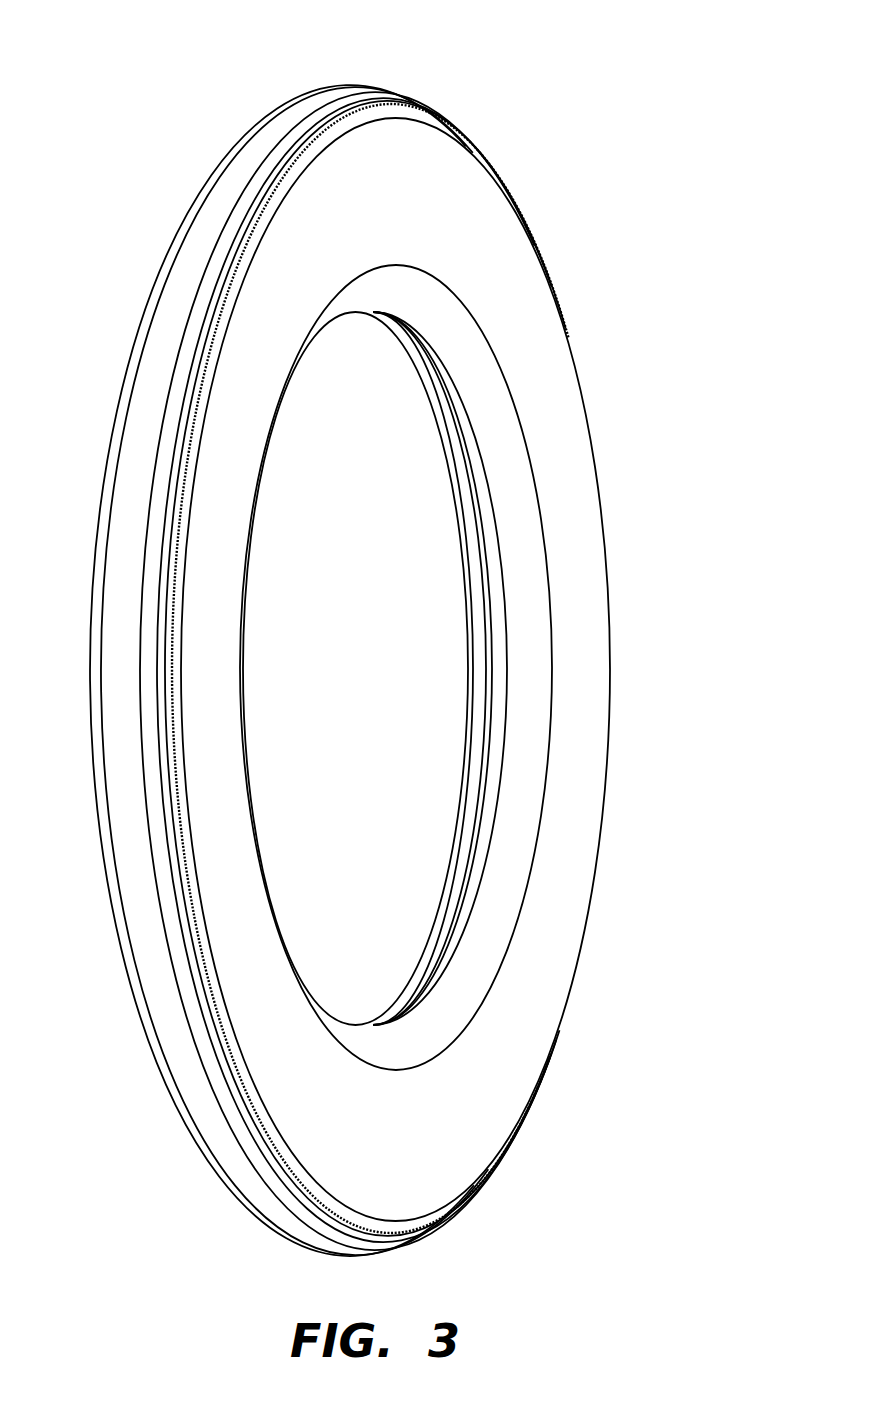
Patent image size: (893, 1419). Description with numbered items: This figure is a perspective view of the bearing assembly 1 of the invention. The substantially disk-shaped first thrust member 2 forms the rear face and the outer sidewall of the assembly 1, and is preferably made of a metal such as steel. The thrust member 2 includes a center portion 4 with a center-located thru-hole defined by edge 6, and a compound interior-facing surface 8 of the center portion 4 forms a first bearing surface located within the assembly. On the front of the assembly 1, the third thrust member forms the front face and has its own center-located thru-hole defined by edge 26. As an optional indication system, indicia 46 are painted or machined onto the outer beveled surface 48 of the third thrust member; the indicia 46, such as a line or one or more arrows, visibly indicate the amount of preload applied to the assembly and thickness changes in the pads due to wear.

The bearing assembly 1 is at (152, 121).
The first thrust member 2 is at (148, 291).
The center portion 4 is at (335, 56).
The edge 6 is at (423, 395).
The compound interior-facing surface 8 is at (458, 434).
The edge 26 is at (478, 476).
The indicia 46 is at (410, 106).
The outer beveled surface 48 is at (425, 119).